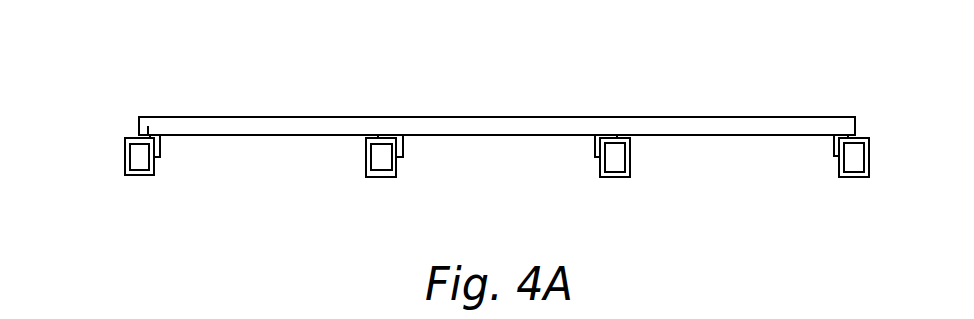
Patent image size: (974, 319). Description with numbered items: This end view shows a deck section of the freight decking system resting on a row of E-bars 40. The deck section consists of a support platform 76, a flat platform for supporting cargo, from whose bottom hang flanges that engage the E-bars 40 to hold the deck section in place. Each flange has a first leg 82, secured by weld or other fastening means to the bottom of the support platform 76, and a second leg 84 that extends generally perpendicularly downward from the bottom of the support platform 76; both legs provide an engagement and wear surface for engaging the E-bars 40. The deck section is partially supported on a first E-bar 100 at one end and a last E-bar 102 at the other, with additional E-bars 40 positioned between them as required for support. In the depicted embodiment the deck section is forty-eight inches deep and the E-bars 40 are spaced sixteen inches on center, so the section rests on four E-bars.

The support platform 76 is at (488, 118).
The first leg 82 is at (142, 137).
The second leg 84 is at (162, 145).
The last E-bar 102 is at (138, 177).
The E-bars 40 is at (600, 167).
The first E-bar 100 is at (869, 145).